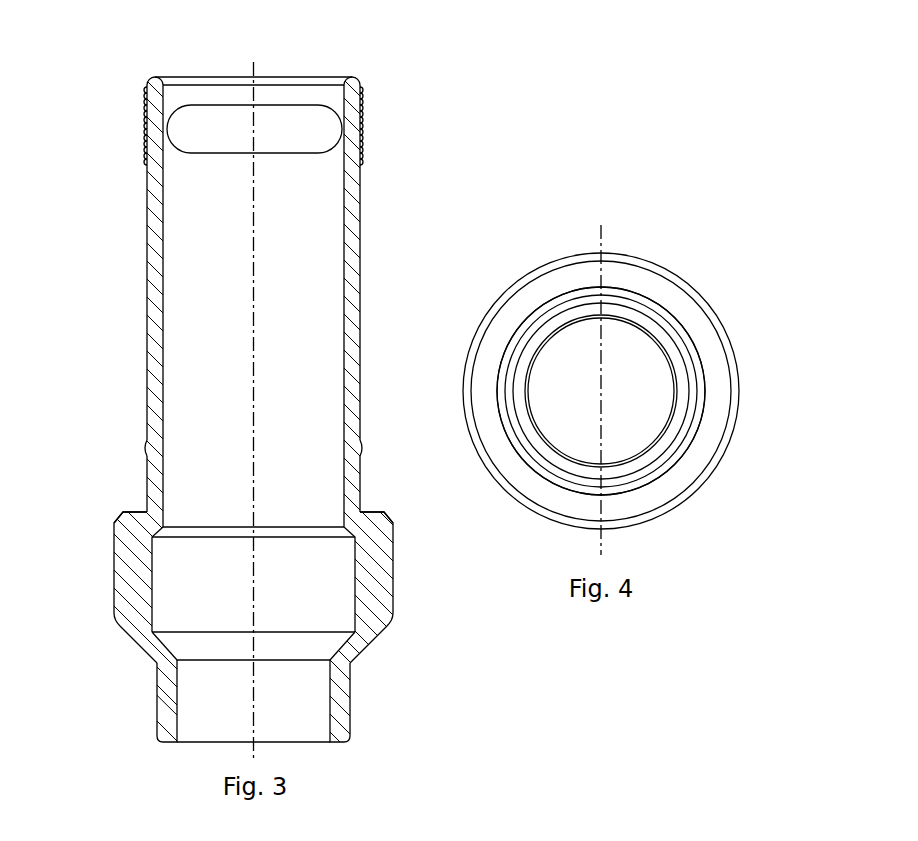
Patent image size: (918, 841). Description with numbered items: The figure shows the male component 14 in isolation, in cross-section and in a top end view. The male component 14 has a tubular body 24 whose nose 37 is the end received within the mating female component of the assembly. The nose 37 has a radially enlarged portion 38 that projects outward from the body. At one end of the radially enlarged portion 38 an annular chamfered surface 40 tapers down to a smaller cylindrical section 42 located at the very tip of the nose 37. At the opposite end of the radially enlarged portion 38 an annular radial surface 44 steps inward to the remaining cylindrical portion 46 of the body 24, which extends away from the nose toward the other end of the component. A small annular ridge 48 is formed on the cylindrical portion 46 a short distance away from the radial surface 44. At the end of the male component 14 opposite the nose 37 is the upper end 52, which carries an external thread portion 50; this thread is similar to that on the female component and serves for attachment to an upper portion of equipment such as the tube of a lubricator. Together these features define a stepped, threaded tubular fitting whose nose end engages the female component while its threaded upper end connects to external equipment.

In FIG. 3, the male component 14 is at (406, 677).
In FIG. 4, the male component 14 is at (533, 262).
In FIG. 3, the tubular body 24 is at (157, 362).
In FIG. 4, the tubular body 24 is at (687, 330).
In FIG. 3, the nose 37 is at (100, 680).
In FIG. 3, the radially enlarged portion 38 is at (121, 578).
In FIG. 4, the radially enlarged portion 38 is at (667, 272).
In FIG. 3, the annular chamfered surface 40 is at (138, 643).
In FIG. 3, the smaller cylindrical section 42 is at (157, 706).
In FIG. 3, the annular radial surface 44 is at (130, 512).
In FIG. 4, the annular radial surface 44 is at (717, 396).
In FIG. 3, the cylindrical portion 46 is at (358, 268).
In FIG. 3, the annular ridge 48 is at (362, 450).
In FIG. 3, the external thread portion 50 is at (134, 148).
In FIG. 3, the upper end 52 is at (166, 60).
In FIG. 4, the upper end 52 is at (626, 434).